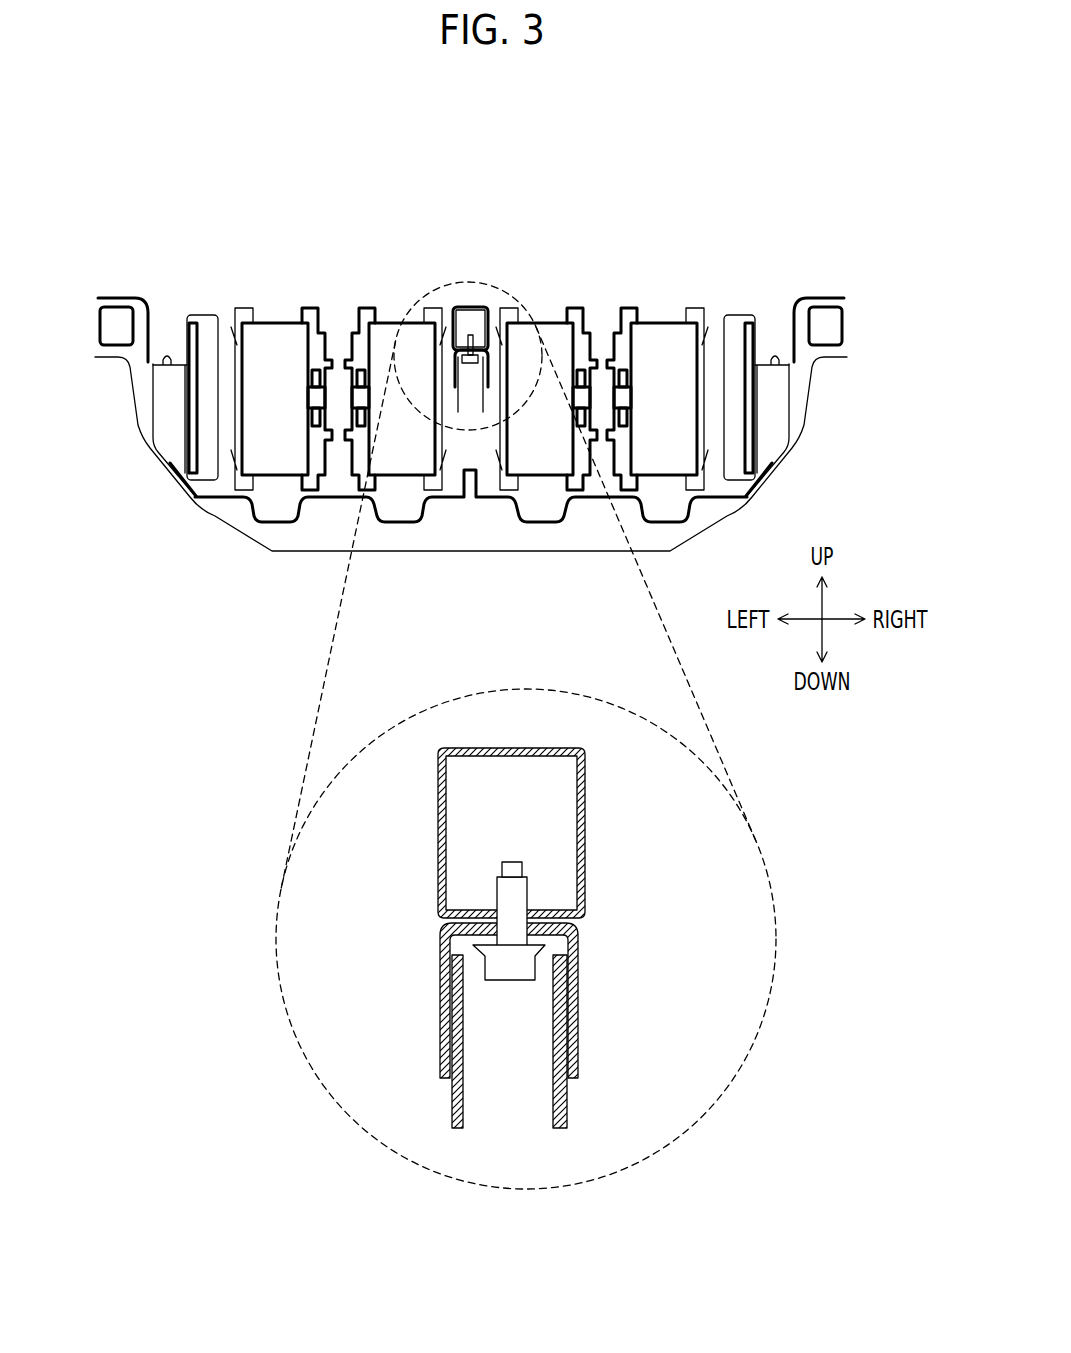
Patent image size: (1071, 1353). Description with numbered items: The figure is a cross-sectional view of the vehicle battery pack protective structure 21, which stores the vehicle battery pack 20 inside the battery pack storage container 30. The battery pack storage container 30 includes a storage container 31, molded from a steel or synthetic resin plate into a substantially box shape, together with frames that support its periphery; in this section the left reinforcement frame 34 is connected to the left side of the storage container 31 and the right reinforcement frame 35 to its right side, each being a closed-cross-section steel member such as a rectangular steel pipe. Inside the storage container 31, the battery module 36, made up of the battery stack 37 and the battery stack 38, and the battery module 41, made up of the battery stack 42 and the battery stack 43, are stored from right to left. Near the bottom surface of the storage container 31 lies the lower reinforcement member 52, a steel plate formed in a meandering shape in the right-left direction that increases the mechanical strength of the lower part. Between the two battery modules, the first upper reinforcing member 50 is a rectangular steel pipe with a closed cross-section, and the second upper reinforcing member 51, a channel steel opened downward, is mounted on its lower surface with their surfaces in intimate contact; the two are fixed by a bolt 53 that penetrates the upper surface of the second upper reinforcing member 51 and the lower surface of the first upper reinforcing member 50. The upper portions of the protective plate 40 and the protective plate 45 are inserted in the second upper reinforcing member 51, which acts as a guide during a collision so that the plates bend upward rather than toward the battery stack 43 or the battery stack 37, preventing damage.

The vehicle battery pack 20 is at (345, 190).
The vehicle battery pack protective structure 21 is at (294, 150).
The battery pack storage container 30 is at (202, 236).
The storage container 31 is at (797, 445).
The left reinforcement frame 34 is at (108, 310).
The right reinforcement frame 35 is at (820, 315).
The battery module 36 is at (546, 237).
The battery stack 37 is at (542, 322).
The battery stack 38 is at (665, 322).
The protective plate 40 is at (562, 1130).
The battery module 41 is at (397, 237).
The battery stack 42 is at (270, 322).
The battery stack 43 is at (390, 322).
The protective plate 45 is at (457, 1130).
The first upper reinforcing member 50 is at (585, 815).
The second upper reinforcing member 51 is at (578, 935).
The lower reinforcement member 52 is at (447, 500).
The bolt 53 is at (512, 982).